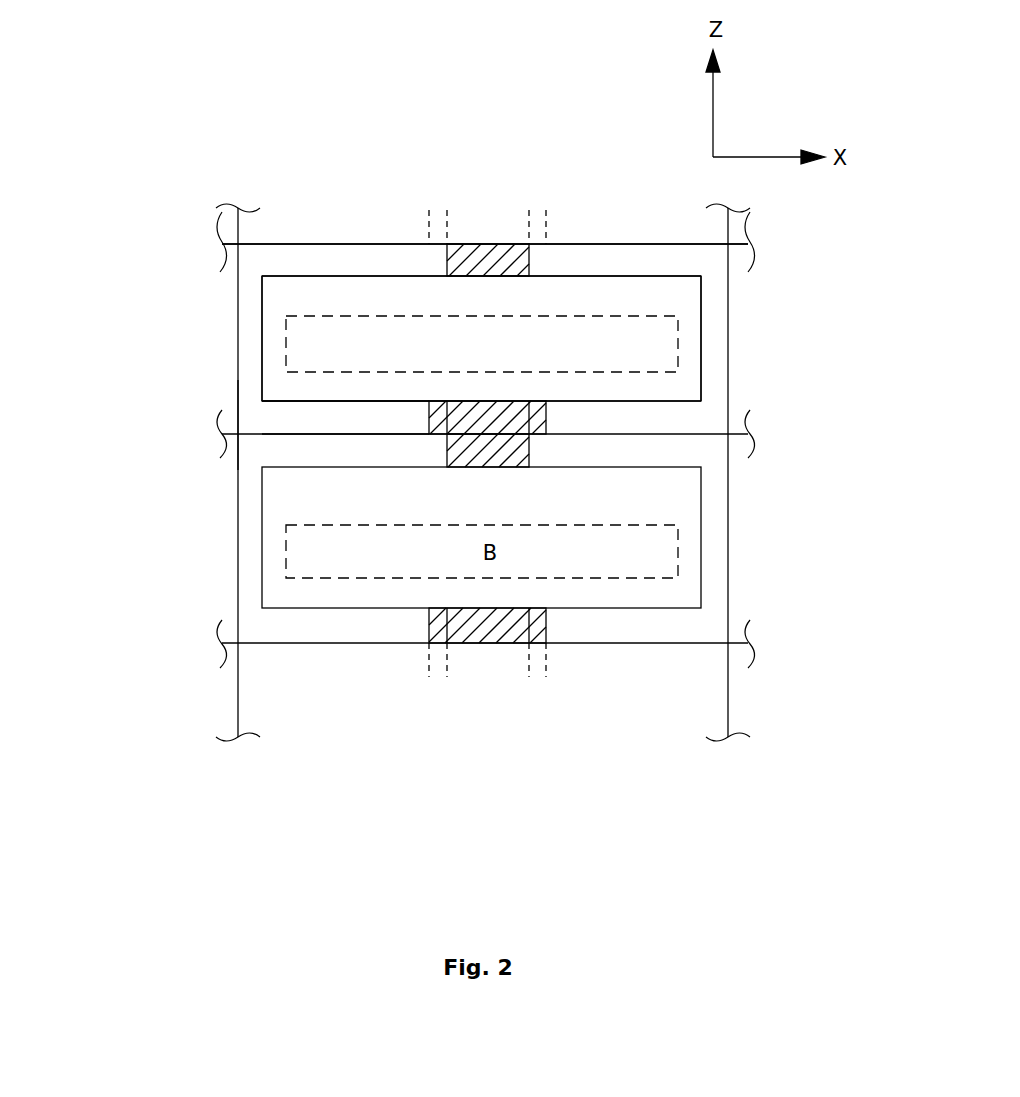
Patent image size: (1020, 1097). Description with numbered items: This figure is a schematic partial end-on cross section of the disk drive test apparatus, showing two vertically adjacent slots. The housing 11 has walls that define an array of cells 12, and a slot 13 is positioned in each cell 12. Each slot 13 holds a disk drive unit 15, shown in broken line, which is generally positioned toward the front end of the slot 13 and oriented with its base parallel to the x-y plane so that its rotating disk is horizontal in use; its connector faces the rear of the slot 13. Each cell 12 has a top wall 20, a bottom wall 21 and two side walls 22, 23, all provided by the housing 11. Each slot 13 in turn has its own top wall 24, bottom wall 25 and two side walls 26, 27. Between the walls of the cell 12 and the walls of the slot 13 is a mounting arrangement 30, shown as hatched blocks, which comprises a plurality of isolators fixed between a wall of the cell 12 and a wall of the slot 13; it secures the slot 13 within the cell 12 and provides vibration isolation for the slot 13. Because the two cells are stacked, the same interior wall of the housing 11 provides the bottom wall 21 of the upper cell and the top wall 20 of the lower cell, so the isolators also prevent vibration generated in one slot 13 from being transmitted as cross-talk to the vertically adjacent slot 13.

The housing 11 is at (282, 238).
The cell 12 is at (250, 272).
The slot 13 is at (278, 303).
The disk drive unit 15 is at (285, 332).
The top wall 20 is at (353, 244).
The bottom wall 21 is at (293, 427).
The side wall 22 is at (237, 393).
The side wall 23 is at (728, 358).
The top wall 24 is at (387, 275).
The bottom wall 25 is at (353, 401).
The side wall 26 is at (260, 355).
The side wall 27 is at (701, 310).
The mounting arrangement 30 is at (488, 244).